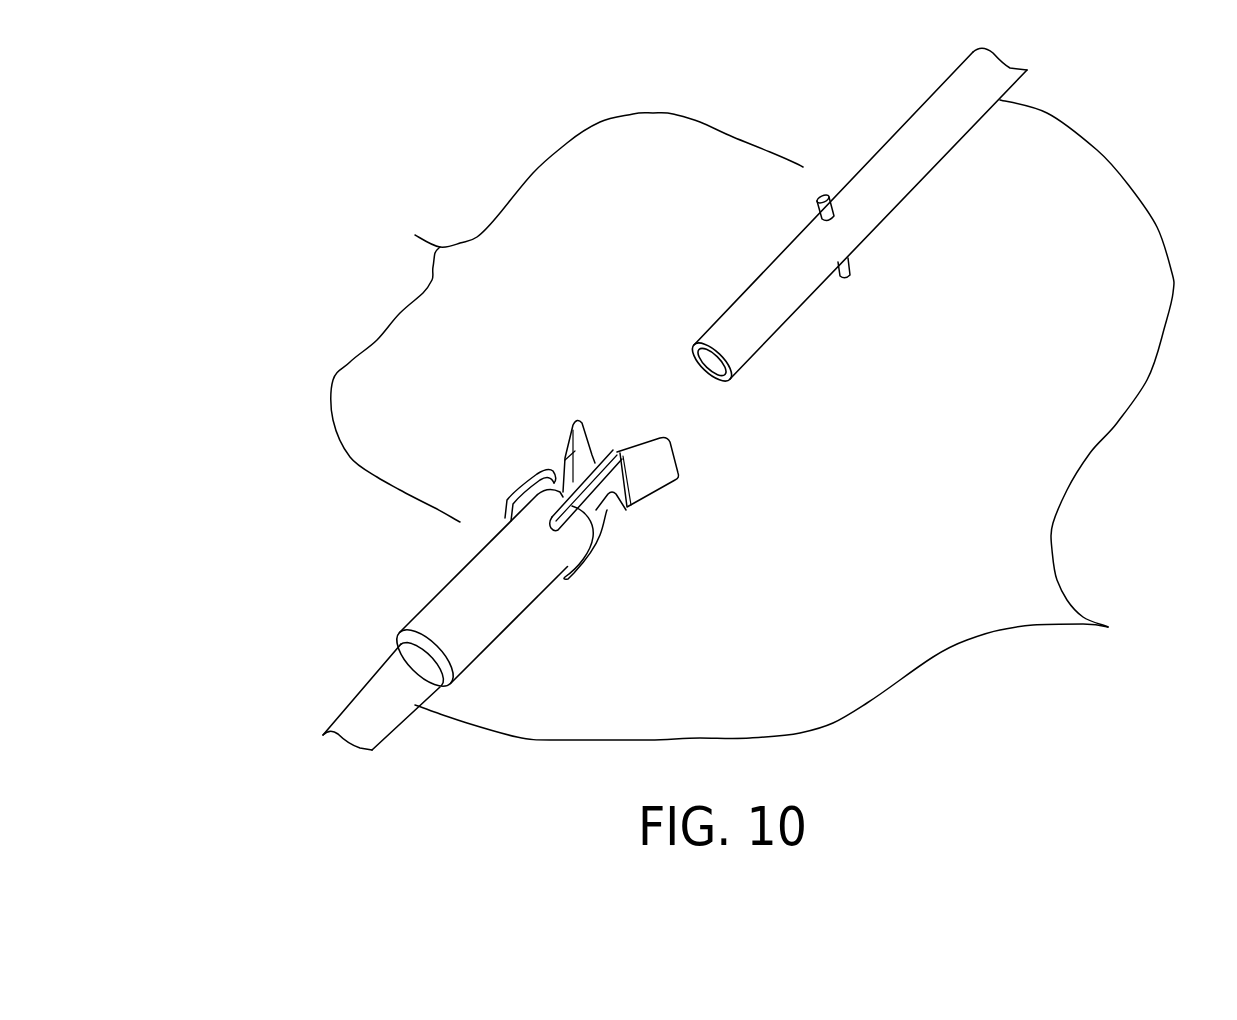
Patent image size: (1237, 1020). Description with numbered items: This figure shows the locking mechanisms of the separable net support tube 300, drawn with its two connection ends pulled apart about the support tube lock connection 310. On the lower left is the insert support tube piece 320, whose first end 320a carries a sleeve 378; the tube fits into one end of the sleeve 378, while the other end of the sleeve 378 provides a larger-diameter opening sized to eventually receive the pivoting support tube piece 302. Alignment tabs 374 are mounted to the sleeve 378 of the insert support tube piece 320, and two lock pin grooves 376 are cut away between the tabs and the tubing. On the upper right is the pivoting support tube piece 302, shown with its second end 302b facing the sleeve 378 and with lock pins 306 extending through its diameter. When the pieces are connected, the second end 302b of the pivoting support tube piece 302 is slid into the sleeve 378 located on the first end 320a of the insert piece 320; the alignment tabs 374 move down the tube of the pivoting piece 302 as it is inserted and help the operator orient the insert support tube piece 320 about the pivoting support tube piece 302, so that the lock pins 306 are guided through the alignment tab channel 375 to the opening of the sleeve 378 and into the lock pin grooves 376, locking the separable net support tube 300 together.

The separable net support tube 300 is at (794, 420).
The support tube lock connection 310 is at (415, 235).
The pivoting support tube piece 302 is at (913, 168).
The second end of the pivoting support tube piece 302b is at (737, 333).
The lock pins 306 is at (833, 213).
The insert support tube piece 320 is at (393, 687).
The first end of the insert support tube piece 320a is at (540, 563).
The alignment tabs 374 is at (583, 440).
The alignment tab channel 375 is at (617, 427).
The lock pin grooves 376 is at (547, 468).
The sleeve 378 is at (487, 580).